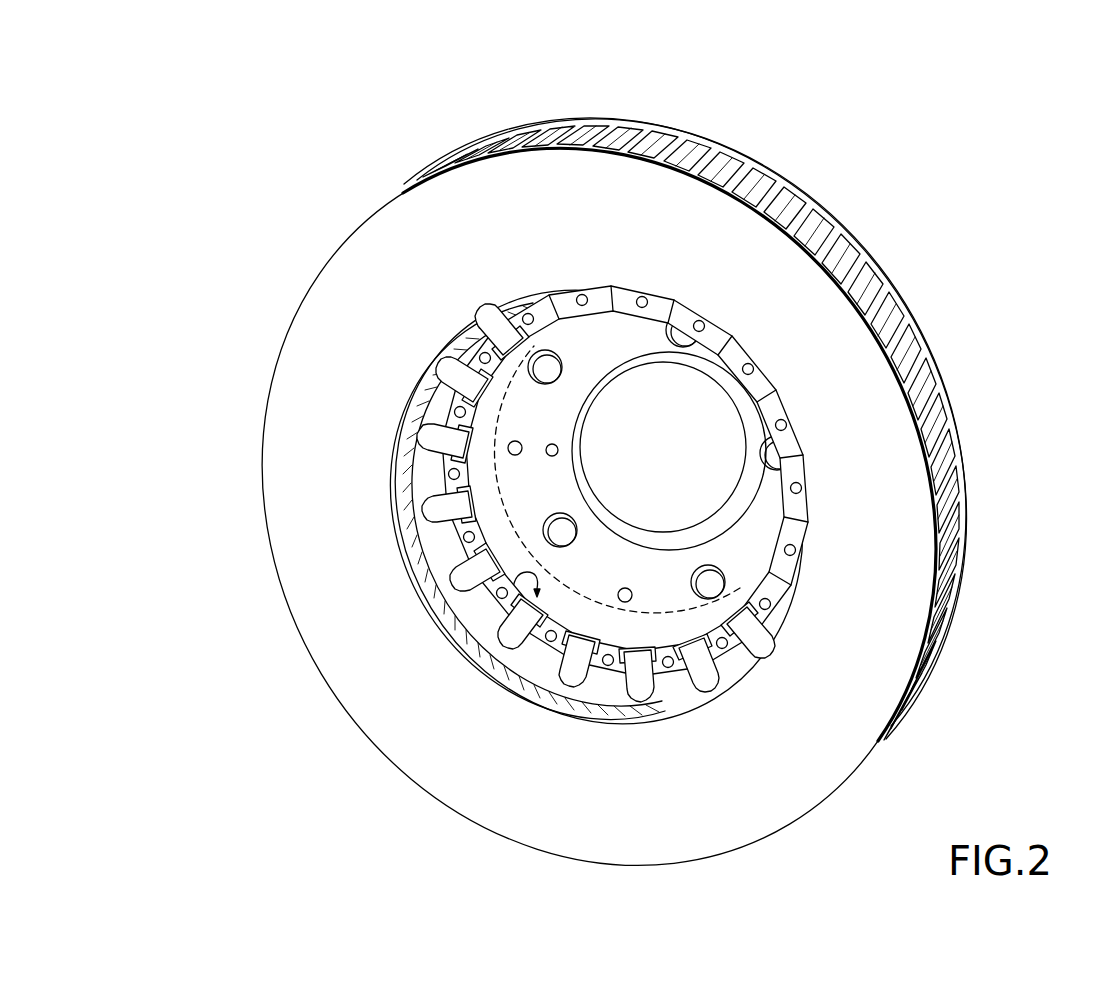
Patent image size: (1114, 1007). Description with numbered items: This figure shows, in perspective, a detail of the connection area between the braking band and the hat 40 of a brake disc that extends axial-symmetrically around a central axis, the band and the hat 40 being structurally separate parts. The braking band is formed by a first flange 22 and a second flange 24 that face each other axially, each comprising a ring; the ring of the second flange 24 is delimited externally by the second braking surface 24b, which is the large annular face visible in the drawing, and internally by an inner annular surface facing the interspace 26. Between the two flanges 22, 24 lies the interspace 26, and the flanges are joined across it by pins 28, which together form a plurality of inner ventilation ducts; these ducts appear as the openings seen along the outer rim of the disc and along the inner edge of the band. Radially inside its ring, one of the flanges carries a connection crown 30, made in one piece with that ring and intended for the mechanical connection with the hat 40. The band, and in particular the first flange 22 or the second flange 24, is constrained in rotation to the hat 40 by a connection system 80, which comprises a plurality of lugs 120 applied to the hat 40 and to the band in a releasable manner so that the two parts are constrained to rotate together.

The first flange 22 is at (596, 692).
The second flange 24 is at (775, 268).
The second braking surface 24b is at (311, 354).
The interspace 26 is at (872, 279).
The pins 28 is at (793, 212).
The connection crown 30 is at (670, 687).
The hat 40 is at (643, 517).
The connection system 80 is at (507, 600).
The lug 120 is at (431, 440).